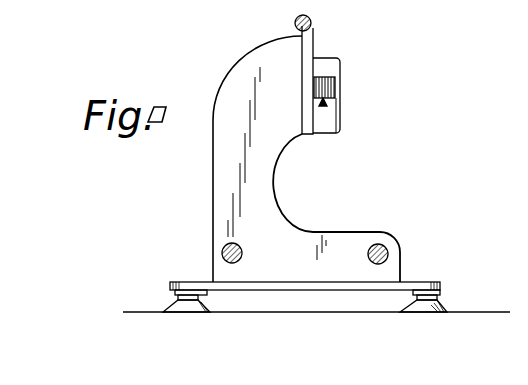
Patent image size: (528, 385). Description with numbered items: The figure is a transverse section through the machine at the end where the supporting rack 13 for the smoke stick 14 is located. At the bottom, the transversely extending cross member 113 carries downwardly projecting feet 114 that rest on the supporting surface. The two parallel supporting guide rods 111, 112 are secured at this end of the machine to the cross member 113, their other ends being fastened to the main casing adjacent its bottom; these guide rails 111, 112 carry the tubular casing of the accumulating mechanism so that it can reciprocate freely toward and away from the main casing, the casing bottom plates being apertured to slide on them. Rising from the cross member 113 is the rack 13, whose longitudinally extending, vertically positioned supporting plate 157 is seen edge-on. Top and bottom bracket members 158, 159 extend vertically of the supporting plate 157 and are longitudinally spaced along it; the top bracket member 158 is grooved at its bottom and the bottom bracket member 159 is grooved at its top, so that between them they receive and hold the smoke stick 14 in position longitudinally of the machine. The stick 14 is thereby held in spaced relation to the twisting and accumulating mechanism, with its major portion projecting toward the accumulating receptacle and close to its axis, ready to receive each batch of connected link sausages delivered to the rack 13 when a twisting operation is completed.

The supporting rack 13 is at (310, 17).
The supporting plate 157 is at (314, 42).
The top bracket member 158 is at (328, 87).
The smoke stick 14 is at (319, 106).
The bottom bracket member 159 is at (330, 125).
The guide rod 111 is at (223, 251).
The guide rod 112 is at (380, 245).
The cross member 113 is at (307, 291).
The feet 114 is at (173, 310).